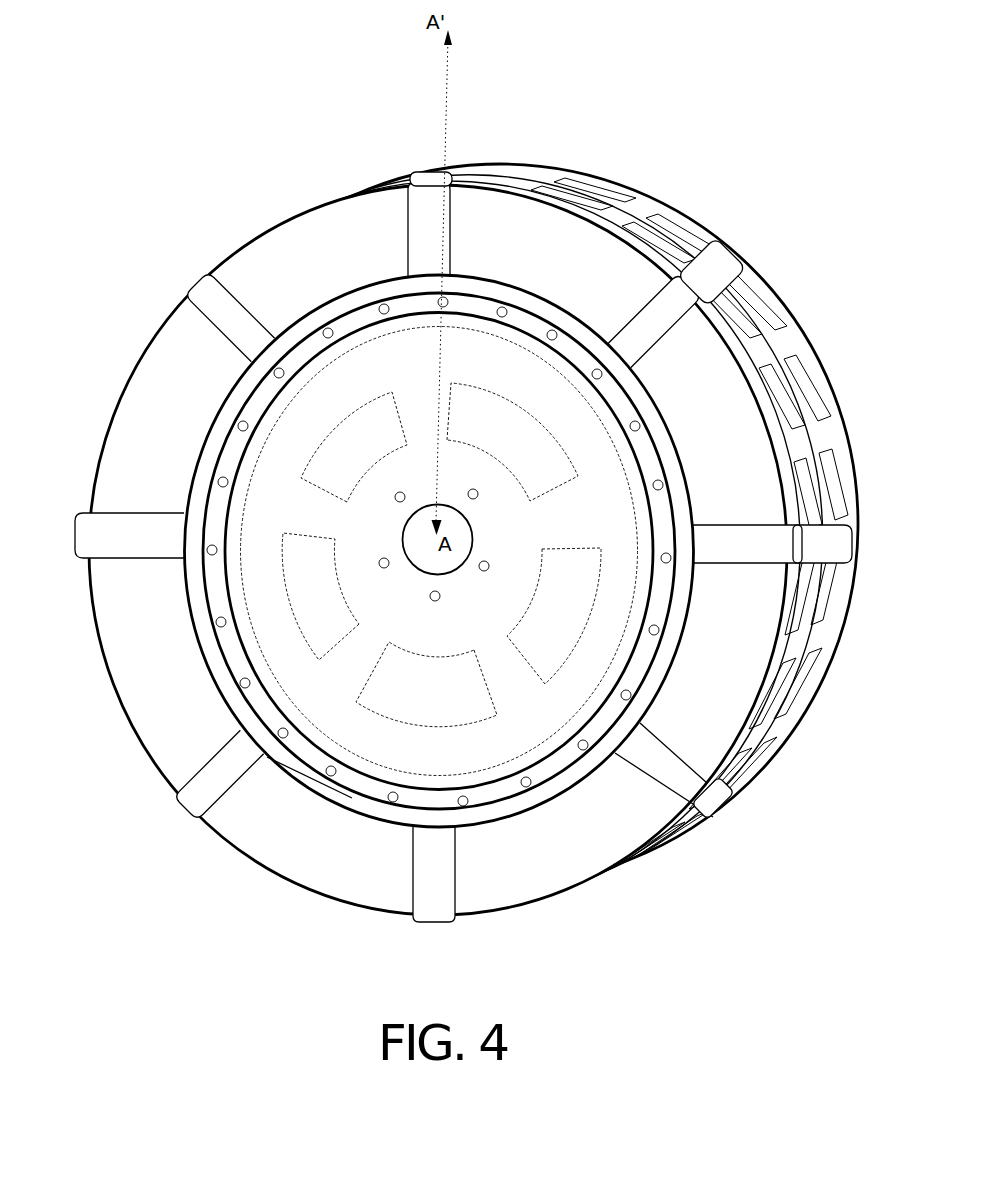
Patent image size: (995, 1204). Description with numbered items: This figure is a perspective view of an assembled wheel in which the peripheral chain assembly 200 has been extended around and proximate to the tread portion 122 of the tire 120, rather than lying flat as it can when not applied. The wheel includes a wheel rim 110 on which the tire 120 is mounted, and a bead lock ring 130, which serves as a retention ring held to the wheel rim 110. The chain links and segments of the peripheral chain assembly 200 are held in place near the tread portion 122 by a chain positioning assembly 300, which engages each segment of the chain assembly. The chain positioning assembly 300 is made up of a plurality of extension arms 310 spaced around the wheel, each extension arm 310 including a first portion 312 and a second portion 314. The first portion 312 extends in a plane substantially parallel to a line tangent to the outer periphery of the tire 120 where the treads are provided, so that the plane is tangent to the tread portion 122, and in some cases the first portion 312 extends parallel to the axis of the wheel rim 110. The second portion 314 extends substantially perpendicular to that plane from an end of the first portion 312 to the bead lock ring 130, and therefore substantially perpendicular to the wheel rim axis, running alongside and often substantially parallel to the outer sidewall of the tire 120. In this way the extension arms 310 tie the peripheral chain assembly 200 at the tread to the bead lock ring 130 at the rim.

The wheel rim 110 is at (373, 737).
The tire 120 is at (135, 685).
The tread portion 122 is at (828, 638).
The bead lock ring 130 is at (352, 798).
The peripheral chain assembly 200 is at (616, 182).
The chain positioning assembly 300 is at (186, 272).
The extension arm 310 is at (100, 556).
The first portion 312 is at (715, 797).
The second portion 314 is at (225, 773).